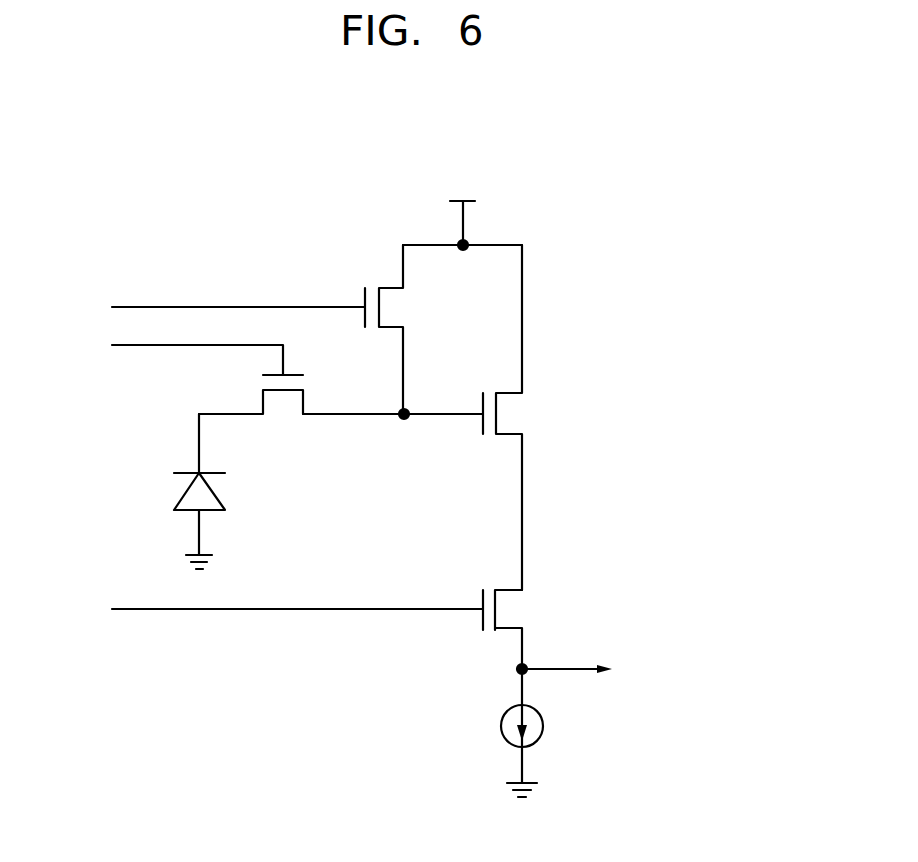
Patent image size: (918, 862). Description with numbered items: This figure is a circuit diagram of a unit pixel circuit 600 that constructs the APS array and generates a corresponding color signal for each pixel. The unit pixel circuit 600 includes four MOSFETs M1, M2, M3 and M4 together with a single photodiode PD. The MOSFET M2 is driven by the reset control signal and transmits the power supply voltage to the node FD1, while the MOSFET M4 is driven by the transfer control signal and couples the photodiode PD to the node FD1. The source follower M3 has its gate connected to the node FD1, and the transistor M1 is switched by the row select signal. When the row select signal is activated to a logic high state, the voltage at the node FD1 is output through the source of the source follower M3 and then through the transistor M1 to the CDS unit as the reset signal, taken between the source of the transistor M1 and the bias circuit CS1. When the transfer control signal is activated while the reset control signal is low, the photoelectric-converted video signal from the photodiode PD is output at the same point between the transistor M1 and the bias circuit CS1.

The unit pixel circuit 600 is at (720, 186).
The transistor M1 is at (332, 629).
The MOSFET M2 is at (275, 329).
The source follower M3 is at (520, 417).
The MOSFET M4 is at (207, 394).
The photodiode PD is at (219, 491).
The node FD1 is at (404, 419).
The bias circuit CS1 is at (548, 733).